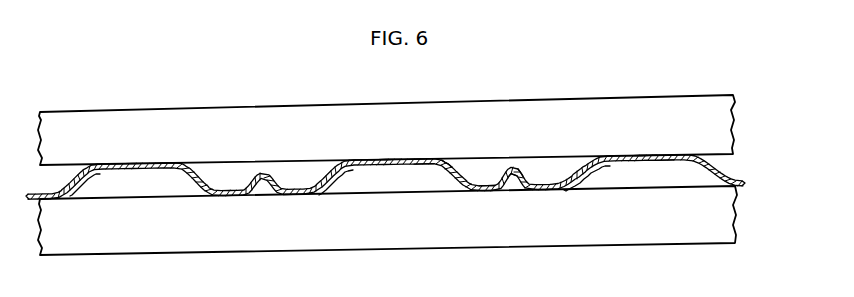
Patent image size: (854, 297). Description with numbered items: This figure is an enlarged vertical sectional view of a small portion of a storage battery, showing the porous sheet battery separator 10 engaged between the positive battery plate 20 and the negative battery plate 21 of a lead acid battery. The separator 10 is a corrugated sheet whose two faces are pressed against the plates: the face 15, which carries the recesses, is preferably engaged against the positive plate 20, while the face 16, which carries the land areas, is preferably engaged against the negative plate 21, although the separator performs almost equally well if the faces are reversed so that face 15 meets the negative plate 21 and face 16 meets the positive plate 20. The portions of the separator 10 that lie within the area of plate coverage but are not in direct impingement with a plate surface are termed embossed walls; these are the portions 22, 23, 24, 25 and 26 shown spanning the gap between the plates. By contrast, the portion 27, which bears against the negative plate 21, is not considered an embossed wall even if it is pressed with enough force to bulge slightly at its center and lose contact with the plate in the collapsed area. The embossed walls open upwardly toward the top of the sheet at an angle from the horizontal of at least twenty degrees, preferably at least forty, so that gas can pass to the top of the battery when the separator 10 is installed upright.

The porous sheet battery separator 10 is at (742, 181).
The face 15 is at (667, 175).
The face 16 is at (650, 151).
The positive battery plate 20 is at (735, 219).
The negative battery plate 21 is at (735, 134).
The embossed wall portion 22 is at (490, 183).
The embossed wall portion 23 is at (447, 163).
The embossed wall portion 24 is at (529, 171).
The embossed wall portion 25 is at (517, 184).
The embossed wall portion 26 is at (427, 167).
The plate-engaging portion 27 is at (388, 160).